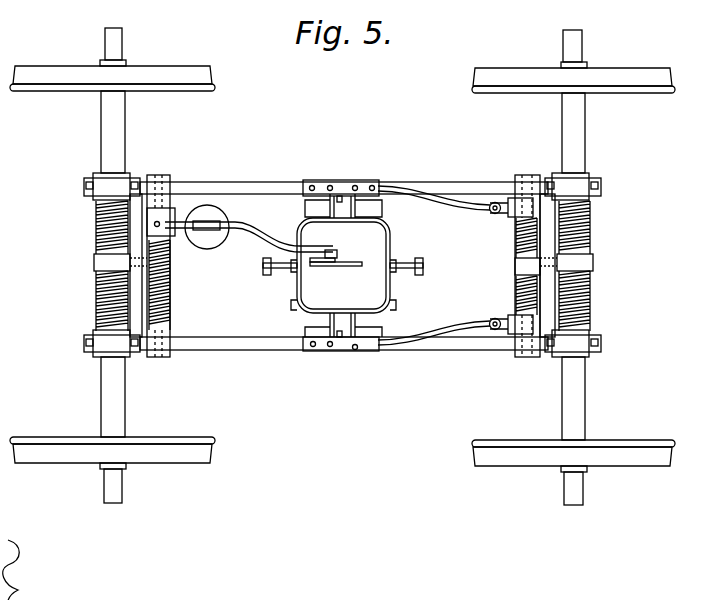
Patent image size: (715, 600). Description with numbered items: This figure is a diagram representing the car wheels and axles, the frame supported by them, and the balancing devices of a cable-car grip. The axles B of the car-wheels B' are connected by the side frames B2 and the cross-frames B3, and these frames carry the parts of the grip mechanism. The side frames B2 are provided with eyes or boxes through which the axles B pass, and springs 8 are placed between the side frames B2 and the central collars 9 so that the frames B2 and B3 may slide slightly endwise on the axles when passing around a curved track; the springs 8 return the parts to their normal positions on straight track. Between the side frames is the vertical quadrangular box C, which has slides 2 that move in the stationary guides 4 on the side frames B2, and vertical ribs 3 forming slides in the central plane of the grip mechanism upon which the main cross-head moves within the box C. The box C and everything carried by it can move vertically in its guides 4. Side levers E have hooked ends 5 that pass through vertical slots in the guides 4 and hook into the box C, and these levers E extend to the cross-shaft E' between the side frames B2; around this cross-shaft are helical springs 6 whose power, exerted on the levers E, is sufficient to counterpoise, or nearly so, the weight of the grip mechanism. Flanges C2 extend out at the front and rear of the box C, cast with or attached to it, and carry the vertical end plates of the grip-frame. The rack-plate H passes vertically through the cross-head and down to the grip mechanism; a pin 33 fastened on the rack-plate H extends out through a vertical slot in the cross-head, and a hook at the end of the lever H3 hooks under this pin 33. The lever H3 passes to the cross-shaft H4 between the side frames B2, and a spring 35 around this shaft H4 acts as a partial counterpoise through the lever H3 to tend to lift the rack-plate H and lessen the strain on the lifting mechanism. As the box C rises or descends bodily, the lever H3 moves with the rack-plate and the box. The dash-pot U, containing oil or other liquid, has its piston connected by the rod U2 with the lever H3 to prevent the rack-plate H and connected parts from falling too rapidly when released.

The car-wheels B' is at (351, 266).
The axles B is at (349, 266).
The side frames B2 is at (475, 358).
The springs 8 is at (94, 234).
The central collars 9 is at (94, 262).
The cross-frames B3 is at (343, 265).
The spring 35 is at (170, 259).
The cross-shaft H4 is at (172, 300).
The rod U2 is at (207, 227).
The dash-pot U is at (189, 232).
The lever H3 is at (270, 222).
The box C is at (406, 283).
The slides 2 is at (348, 216).
The stationary guides 4 is at (380, 211).
The hooked ends 5 is at (341, 204).
The vertical ribs 3 is at (301, 270).
The pin 33 is at (338, 254).
The rack-plate H is at (336, 270).
The flanges C2 is at (344, 264).
The side levers E is at (455, 265).
The cross-shaft E' is at (519, 267).
The helical springs 6 is at (517, 266).